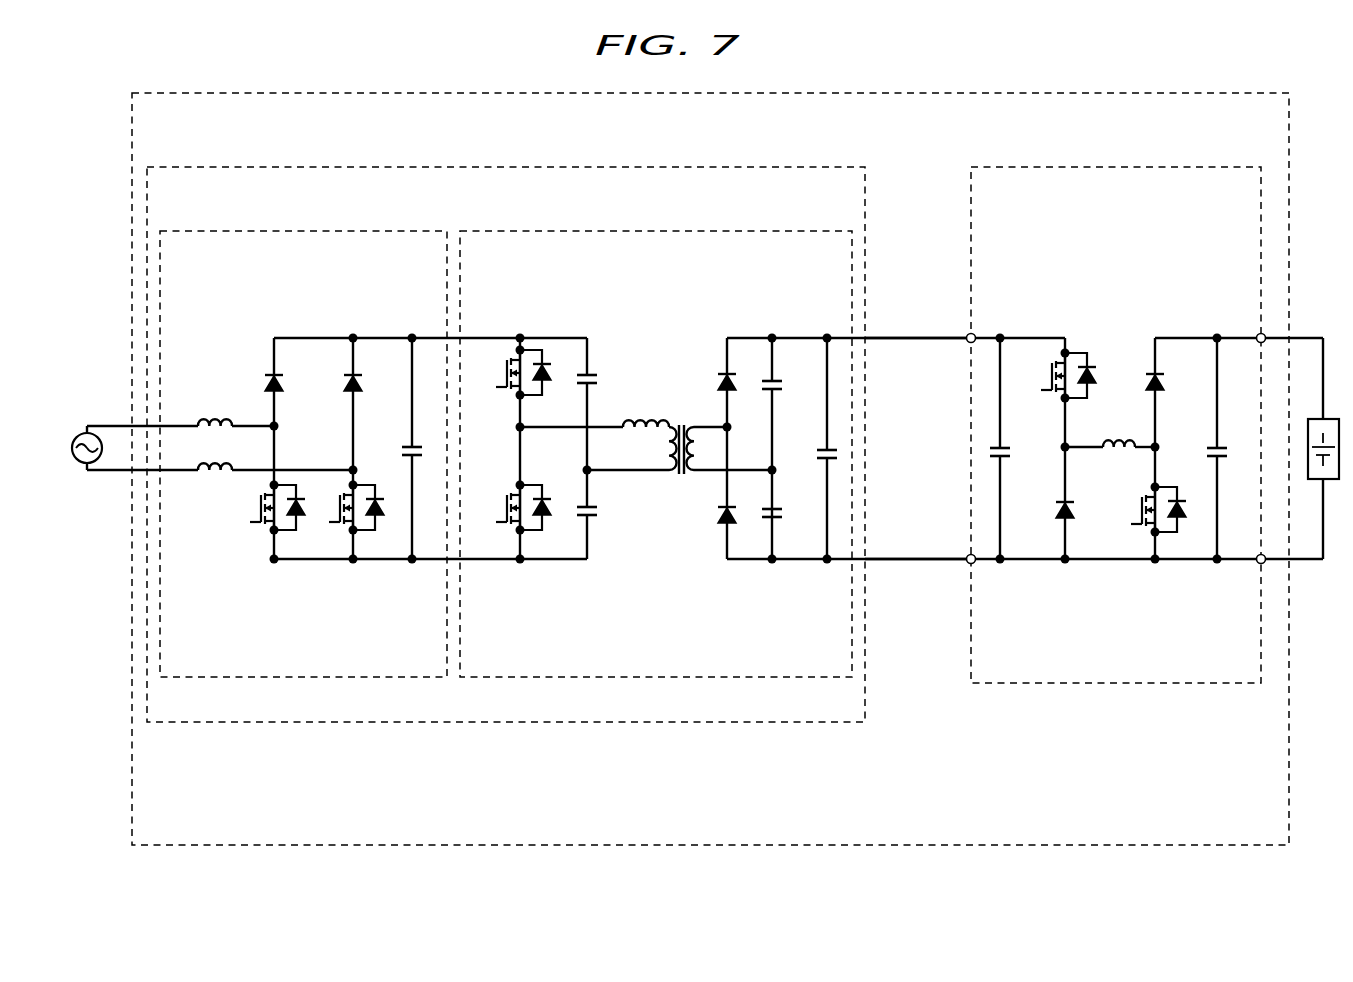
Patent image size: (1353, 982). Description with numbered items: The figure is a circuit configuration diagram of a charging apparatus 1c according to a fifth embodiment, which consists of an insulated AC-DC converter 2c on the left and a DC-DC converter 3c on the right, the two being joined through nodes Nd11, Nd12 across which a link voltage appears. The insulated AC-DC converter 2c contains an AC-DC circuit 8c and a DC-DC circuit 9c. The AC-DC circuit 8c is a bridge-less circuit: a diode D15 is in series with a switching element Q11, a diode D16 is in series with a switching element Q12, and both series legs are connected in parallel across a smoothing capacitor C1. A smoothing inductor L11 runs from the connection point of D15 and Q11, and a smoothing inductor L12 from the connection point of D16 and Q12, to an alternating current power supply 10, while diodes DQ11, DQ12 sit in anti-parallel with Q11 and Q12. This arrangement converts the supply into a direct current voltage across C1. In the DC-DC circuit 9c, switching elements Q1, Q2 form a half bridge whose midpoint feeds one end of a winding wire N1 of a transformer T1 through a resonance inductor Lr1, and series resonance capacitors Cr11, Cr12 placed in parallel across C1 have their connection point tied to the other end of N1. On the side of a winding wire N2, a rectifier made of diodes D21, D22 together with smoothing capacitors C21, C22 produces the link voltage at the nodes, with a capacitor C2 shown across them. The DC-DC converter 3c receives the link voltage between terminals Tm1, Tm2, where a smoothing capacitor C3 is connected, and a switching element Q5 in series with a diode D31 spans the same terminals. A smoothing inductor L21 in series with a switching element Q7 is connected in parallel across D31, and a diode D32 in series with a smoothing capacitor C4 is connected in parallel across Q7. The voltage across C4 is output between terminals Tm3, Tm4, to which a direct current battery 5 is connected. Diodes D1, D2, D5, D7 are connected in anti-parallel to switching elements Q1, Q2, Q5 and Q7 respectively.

The charging apparatus 1c is at (195, 93).
The insulated AC-DC converter 2c is at (237, 165).
The AC-DC circuit 8c is at (250, 230).
The DC-DC circuit 9c is at (548, 230).
The DC-DC converter 3c is at (1050, 165).
The alternating current power supply 10 is at (73, 432).
The direct current battery 5 is at (1323, 418).
The smoothing inductor L11 is at (217, 417).
The smoothing inductor L12 is at (215, 480).
The diode D15 is at (260, 375).
The diode D16 is at (338, 373).
The smoothing capacitor C1 is at (405, 438).
The switching element Q11 is at (263, 533).
The diode DQ11 is at (302, 535).
The switching element Q12 is at (335, 530).
The diode DQ12 is at (375, 535).
The switching element Q1 is at (503, 367).
The diode D1 is at (550, 358).
The resonance capacitor Cr11 is at (595, 370).
The resonance inductor Lr1 is at (637, 420).
The transformer T1 is at (671, 462).
The winding wire N1 is at (670, 480).
The winding wire N2 is at (697, 473).
The diode D21 is at (717, 367).
The smoothing capacitor C21 is at (760, 373).
The capacitor C2 is at (817, 445).
The switching element Q2 is at (503, 532).
The diode D2 is at (543, 532).
The resonance capacitor Cr12 is at (593, 523).
The diode D22 is at (723, 527).
The smoothing capacitor C22 is at (762, 523).
The node Nd11 is at (918, 337).
The node Nd12 is at (912, 563).
The terminal Tm1 is at (966, 333).
The terminal Tm2 is at (973, 565).
The terminal Tm3 is at (1259, 333).
The terminal Tm4 is at (1261, 565).
The smoothing capacitor C3 is at (993, 440).
The switching element Q5 is at (1057, 360).
The diode D5 is at (1093, 360).
The diode D31 is at (1050, 565).
The smoothing inductor L21 is at (1115, 430).
The diode D32 is at (1162, 365).
The switching element Q7 is at (1137, 535).
The diode D7 is at (1177, 538).
The smoothing capacitor C4 is at (1220, 463).